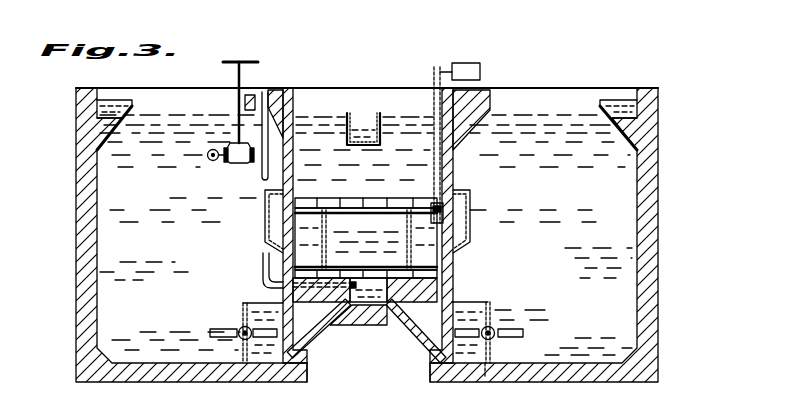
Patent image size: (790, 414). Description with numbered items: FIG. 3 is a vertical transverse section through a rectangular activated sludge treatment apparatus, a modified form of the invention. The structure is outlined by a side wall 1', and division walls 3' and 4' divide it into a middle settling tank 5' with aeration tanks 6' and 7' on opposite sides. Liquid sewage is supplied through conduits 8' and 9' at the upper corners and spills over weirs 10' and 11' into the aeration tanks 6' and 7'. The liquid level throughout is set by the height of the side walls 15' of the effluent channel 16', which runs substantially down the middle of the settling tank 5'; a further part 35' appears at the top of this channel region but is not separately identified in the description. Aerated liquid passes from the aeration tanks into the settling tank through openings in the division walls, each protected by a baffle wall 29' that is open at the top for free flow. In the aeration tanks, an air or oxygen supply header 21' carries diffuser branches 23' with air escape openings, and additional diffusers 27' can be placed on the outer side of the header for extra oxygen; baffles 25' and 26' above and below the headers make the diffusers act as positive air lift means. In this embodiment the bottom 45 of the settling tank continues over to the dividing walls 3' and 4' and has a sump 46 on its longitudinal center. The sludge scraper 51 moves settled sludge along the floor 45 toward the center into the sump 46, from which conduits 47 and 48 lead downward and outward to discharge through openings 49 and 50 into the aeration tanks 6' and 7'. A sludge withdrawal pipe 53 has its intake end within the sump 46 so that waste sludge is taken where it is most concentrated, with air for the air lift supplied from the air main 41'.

The side wall 1' is at (377, 235).
The division wall 3' is at (276, 215).
The division wall 4' is at (468, 215).
The settling tank 5' is at (364, 124).
The aeration tank 6' is at (181, 209).
The aeration tank 7' is at (551, 211).
The conduit 8' is at (87, 108).
The conduit 9' is at (642, 108).
The weir 10' is at (122, 109).
The weir 11' is at (617, 109).
The side walls of effluent channel 15' is at (363, 106).
The effluent channel 16' is at (418, 145).
The float box 35' is at (462, 63).
The air main 41' is at (212, 129).
The sludge scraper 51 is at (378, 190).
The baffle wall 29' is at (347, 221).
The sludge withdrawal pipe 53 is at (262, 268).
The diffuser branch 23' is at (238, 325).
The air supply header 21' is at (222, 346).
The diffuser 27' is at (219, 337).
The baffle 25' is at (487, 321).
The baffle 26' is at (508, 385).
The sump 46 is at (360, 308).
The bottom of settling tank 45 is at (405, 321).
The conduit 47 is at (309, 341).
The conduit 48 is at (427, 350).
The opening 49 is at (285, 378).
The opening 50 is at (440, 379).